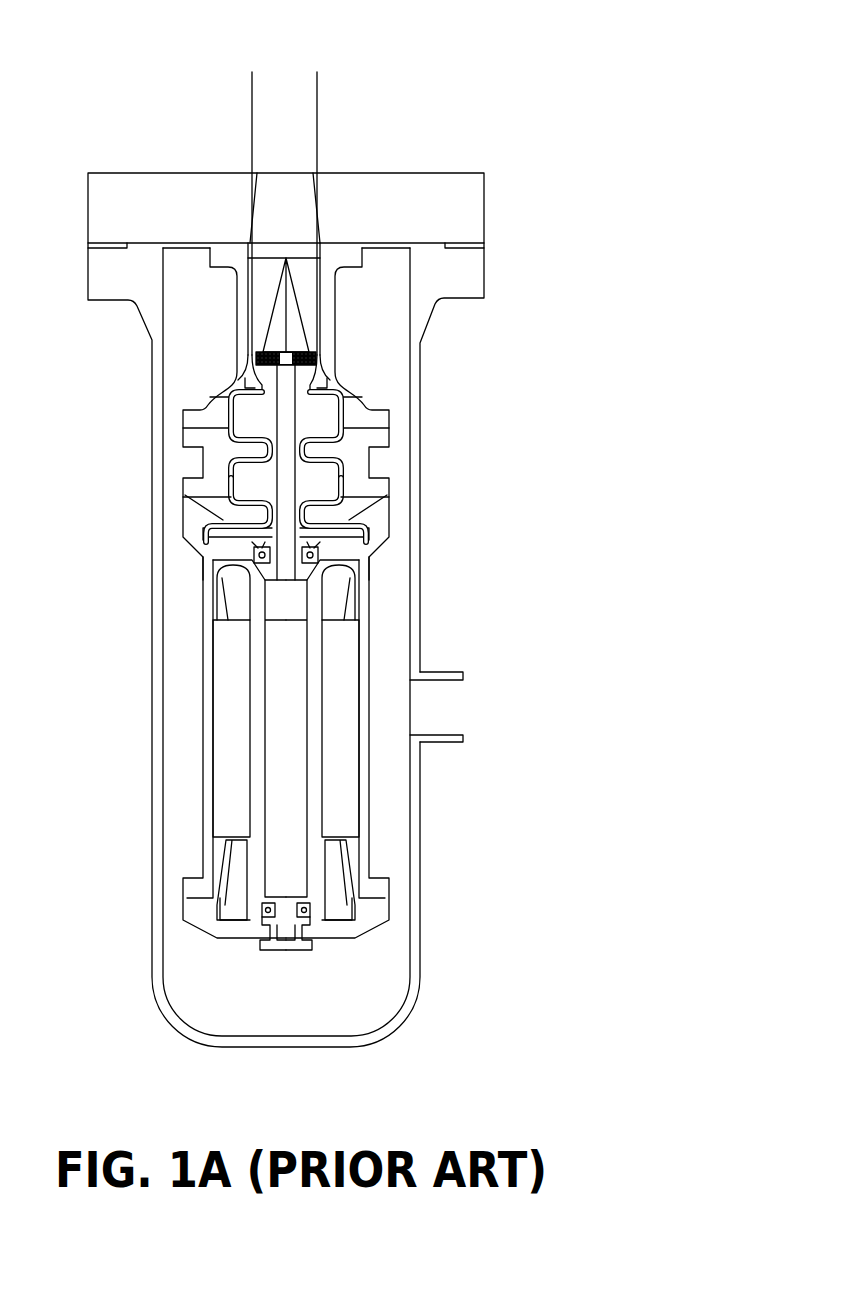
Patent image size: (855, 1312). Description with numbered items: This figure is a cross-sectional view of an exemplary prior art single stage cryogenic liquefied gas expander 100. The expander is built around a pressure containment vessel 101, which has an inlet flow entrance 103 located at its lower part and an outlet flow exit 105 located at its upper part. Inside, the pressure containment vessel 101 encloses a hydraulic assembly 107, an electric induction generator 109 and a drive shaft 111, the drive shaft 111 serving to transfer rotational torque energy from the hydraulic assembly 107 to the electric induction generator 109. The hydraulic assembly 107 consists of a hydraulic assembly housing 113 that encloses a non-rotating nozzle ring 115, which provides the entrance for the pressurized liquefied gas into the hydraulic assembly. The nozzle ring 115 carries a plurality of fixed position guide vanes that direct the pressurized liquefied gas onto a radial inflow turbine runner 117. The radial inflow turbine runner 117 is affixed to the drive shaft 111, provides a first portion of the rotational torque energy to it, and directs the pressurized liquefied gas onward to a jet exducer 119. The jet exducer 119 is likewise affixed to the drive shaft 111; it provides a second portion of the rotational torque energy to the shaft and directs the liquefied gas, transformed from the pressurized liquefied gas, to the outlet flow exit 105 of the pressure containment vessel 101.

The single stage cryogenic liquefied gas expander 100 is at (191, 135).
The pressure containment vessel 101 is at (420, 900).
The inlet flow entrance 103 is at (445, 717).
The outlet flow exit 105 is at (295, 140).
The hydraulic assembly 107 is at (180, 402).
The electric induction generator 109 is at (203, 732).
The drive shaft 111 is at (285, 485).
The hydraulic assembly housing 113 is at (355, 445).
The non-rotating nozzle ring 115 is at (220, 496).
The radial inflow turbine runner 117 is at (310, 478).
The jet exducer 119 is at (293, 330).